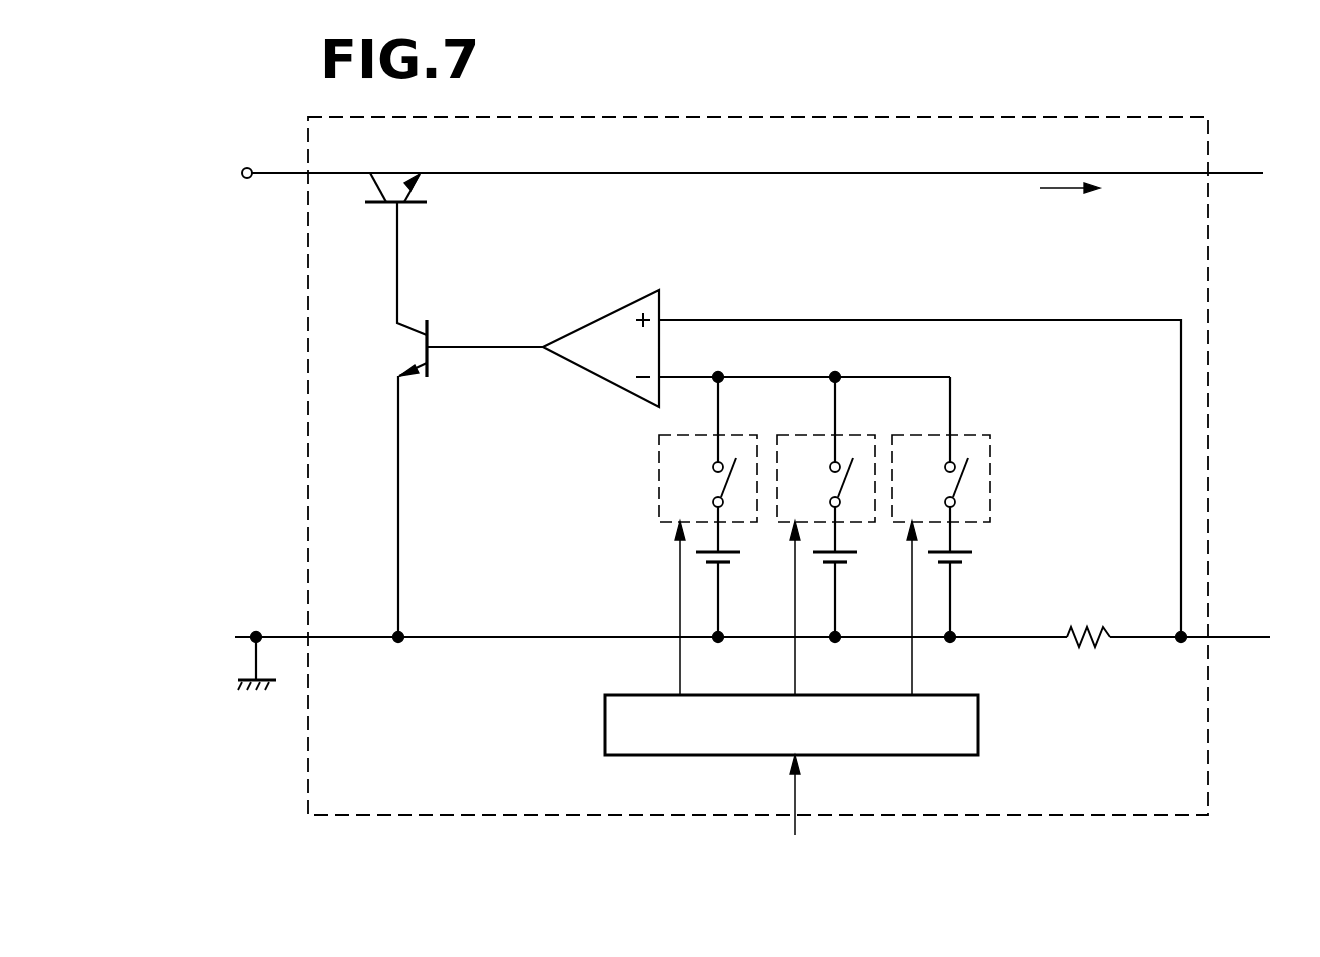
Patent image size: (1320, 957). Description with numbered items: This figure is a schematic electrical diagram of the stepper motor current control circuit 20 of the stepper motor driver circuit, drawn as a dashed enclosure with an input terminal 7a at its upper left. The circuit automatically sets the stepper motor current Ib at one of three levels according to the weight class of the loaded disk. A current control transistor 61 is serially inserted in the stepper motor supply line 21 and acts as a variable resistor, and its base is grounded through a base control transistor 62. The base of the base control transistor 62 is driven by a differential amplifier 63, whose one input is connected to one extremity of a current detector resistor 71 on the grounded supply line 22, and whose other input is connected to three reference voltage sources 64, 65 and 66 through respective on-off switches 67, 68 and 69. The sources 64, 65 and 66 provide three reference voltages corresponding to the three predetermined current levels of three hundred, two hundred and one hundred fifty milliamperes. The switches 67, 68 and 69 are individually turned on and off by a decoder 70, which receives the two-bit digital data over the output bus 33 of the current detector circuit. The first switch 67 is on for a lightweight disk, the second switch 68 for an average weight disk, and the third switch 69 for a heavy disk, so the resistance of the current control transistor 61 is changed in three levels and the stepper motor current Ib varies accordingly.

The input terminal 7a is at (242, 174).
The current control circuit 20 is at (1212, 445).
The stepper motor supply line 21 is at (1232, 172).
The grounded supply line 22 is at (1237, 637).
The output bus 33 is at (791, 810).
The current control transistor 61 is at (408, 205).
The base control transistor 62 is at (431, 353).
The differential amplifier 63 is at (598, 320).
The first reference voltage source 64 is at (732, 550).
The second reference voltage source 65 is at (849, 550).
The third reference voltage source 66 is at (964, 550).
The first switch 67 is at (731, 435).
The second switch 68 is at (848, 435).
The third switch 69 is at (963, 435).
The decoder 70 is at (982, 729).
The current detector resistor 71 is at (1089, 645).